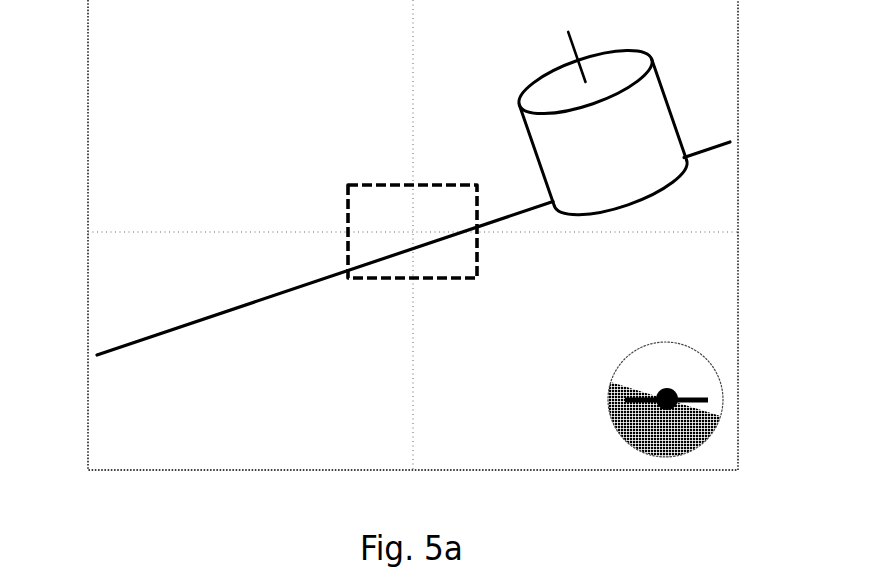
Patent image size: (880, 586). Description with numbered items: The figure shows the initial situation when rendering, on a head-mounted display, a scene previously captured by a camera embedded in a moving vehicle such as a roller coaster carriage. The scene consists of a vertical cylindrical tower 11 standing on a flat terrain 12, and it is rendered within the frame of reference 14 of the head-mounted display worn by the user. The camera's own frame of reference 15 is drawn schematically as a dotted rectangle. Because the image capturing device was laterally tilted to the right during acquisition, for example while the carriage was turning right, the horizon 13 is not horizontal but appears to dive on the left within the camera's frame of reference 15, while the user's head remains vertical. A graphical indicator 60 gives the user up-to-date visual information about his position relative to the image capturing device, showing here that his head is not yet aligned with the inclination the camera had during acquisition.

The vertical cylindrical tower 11 is at (643, 95).
The flat terrain 12 is at (730, 180).
The horizon 13 is at (180, 328).
The frame of reference of the head-mounted display 14 is at (88, 48).
The frame of reference of the image capturing device 15 is at (345, 212).
The graphical indicator 60 is at (603, 405).